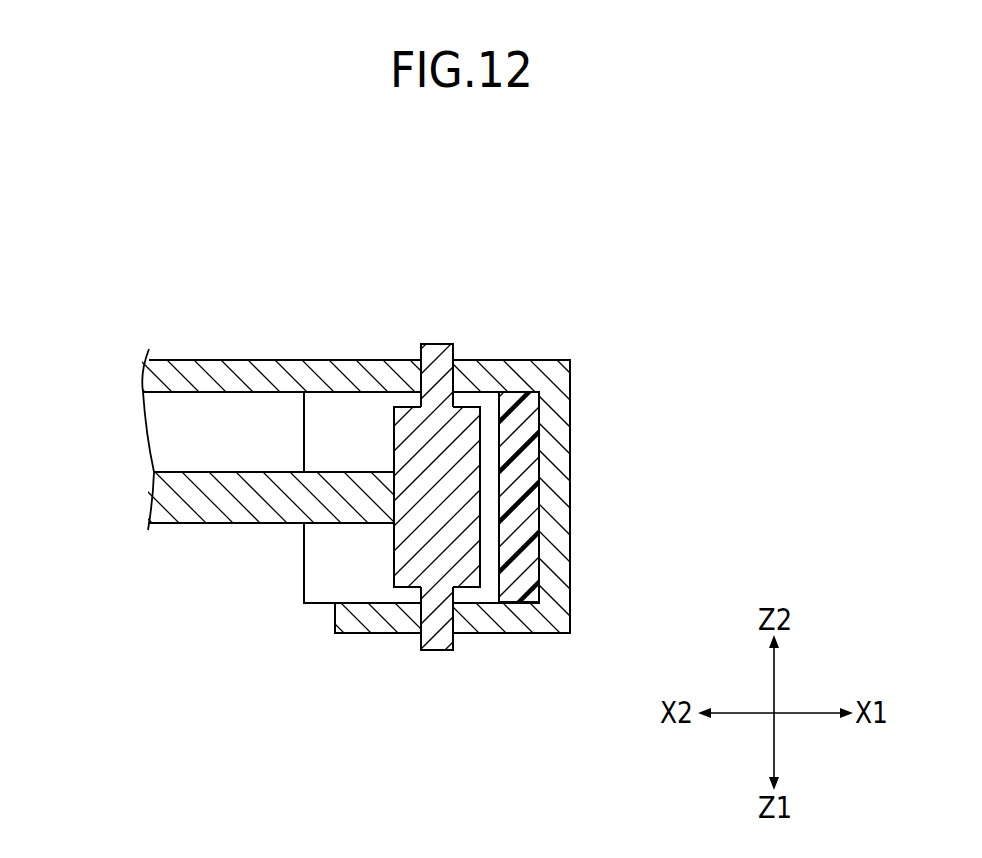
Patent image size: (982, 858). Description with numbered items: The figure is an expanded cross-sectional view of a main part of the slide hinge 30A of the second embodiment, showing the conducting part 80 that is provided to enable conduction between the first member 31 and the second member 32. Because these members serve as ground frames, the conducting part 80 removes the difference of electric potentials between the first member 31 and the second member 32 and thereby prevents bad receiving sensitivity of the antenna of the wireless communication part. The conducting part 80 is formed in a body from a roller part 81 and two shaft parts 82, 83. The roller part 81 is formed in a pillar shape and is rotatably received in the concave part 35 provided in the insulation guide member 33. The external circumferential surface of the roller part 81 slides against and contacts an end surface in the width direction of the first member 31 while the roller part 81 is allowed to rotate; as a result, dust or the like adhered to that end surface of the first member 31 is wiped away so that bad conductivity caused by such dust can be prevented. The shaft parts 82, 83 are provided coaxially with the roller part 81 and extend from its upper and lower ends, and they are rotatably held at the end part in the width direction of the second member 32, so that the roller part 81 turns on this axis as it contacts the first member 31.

The slide hinge 30A is at (118, 336).
The first member 31 is at (218, 512).
The second member 32 is at (218, 376).
The insulation guide member 33 is at (520, 436).
The concave part 35 is at (353, 400).
The conducting part 80 is at (362, 558).
The roller part 81 is at (467, 510).
The shaft part 82 is at (434, 352).
The shaft part 83 is at (434, 638).